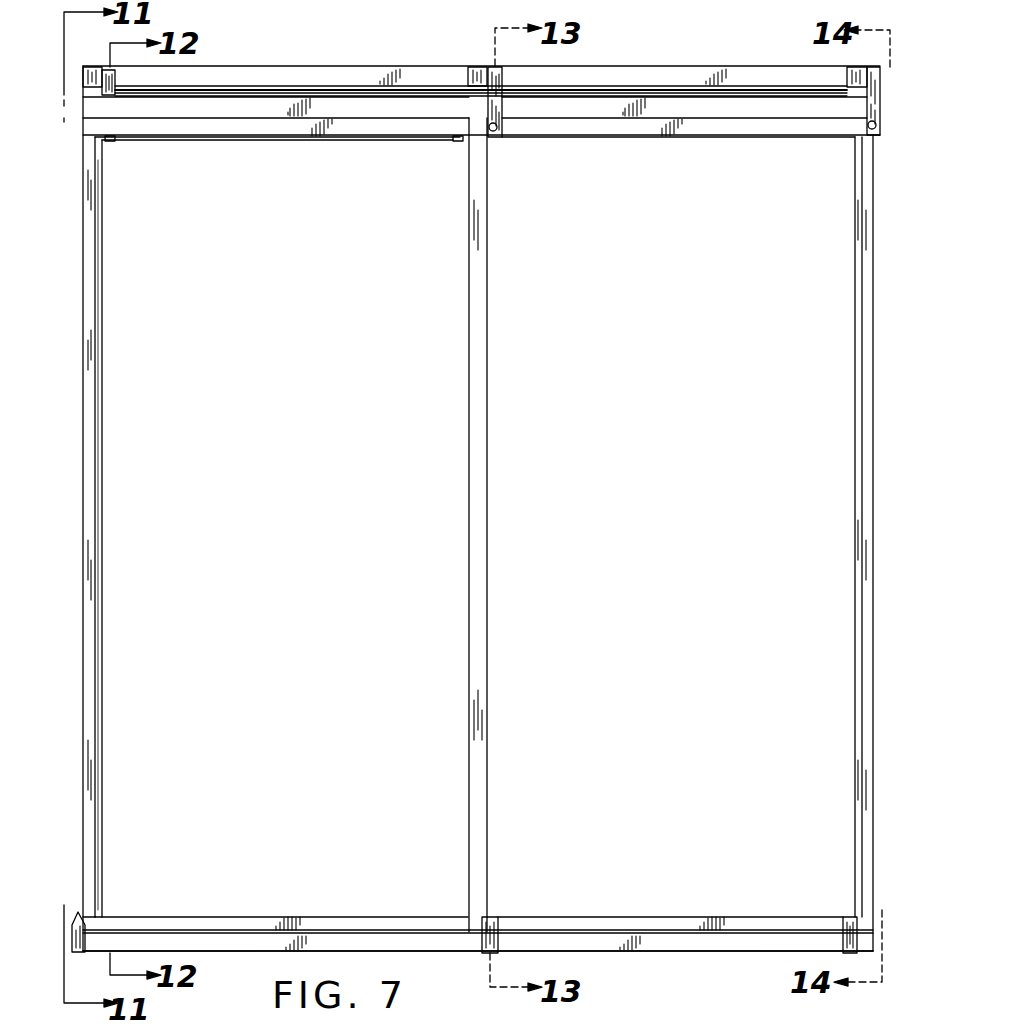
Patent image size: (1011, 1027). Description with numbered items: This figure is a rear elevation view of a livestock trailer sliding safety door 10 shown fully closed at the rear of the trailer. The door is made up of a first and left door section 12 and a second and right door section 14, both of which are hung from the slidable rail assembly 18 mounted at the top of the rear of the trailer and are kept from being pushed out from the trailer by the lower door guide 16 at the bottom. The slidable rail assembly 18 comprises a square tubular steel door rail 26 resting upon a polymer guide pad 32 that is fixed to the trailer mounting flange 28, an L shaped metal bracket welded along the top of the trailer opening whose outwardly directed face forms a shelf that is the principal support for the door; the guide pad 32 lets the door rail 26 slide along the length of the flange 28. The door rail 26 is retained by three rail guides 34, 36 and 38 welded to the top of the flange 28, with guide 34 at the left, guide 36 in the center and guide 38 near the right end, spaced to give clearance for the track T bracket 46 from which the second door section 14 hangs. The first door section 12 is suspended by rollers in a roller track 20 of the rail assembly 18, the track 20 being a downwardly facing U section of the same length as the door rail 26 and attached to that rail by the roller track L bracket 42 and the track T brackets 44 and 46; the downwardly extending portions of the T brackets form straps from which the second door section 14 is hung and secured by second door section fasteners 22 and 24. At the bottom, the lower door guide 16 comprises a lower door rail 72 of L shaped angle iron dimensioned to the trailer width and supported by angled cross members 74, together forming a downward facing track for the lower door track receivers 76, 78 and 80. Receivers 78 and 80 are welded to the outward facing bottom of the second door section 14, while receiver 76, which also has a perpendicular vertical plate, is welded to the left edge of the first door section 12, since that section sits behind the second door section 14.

The sliding window assembly 10 is at (730, 56).
The first door section 12 is at (130, 548).
The second door section 14 is at (826, 576).
The lower door guide 16 is at (634, 944).
The slidable rail assembly 18 is at (684, 68).
The roller track 20 is at (207, 106).
The second door section fastener 22 is at (494, 132).
The second door section fastener 24 is at (872, 130).
The door rail 26 is at (332, 78).
The trailer mounting flange 28 is at (226, 88).
The polymer guide pad 32 is at (288, 88).
The rail guide 34 is at (85, 72).
The rail guide 36 is at (472, 62).
The rail guide 38 is at (847, 78).
The roller track L bracket 42 is at (113, 96).
The track T bracket 44 is at (503, 105).
The track T bracket 46 is at (863, 106).
The lower door rail 72 is at (462, 944).
The cross member 74 is at (230, 944).
The lower door track receiver 76 is at (78, 954).
The lower door track receiver 78 is at (492, 922).
The lower door track receiver 80 is at (848, 920).